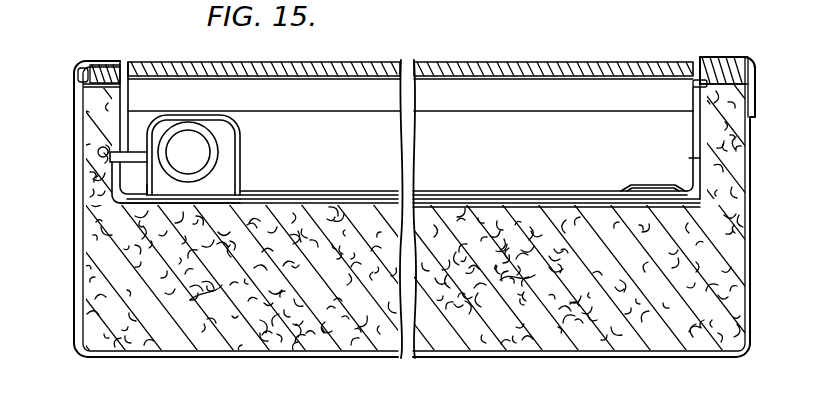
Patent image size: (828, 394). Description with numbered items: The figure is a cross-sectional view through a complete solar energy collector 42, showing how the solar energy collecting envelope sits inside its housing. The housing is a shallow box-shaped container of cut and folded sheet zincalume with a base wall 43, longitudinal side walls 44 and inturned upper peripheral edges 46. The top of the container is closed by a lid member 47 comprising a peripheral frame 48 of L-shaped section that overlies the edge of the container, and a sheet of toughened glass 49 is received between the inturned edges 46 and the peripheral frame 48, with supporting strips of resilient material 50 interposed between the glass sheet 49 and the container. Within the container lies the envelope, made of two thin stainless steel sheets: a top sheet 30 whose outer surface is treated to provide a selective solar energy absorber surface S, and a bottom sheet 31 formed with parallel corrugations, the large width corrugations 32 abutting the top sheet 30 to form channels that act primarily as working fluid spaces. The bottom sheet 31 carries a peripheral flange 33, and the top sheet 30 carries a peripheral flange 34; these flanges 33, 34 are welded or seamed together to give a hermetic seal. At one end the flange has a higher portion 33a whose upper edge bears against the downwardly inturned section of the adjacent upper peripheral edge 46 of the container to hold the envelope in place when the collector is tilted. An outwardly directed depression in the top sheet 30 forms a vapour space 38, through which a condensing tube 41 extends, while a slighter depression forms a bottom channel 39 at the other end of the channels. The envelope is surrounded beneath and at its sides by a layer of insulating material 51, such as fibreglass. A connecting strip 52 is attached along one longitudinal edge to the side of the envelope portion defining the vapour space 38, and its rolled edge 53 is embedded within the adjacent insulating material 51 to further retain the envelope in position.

The top sheet 30 is at (527, 189).
The bottom sheet 31 is at (561, 211).
The large width corrugations 32 is at (240, 182).
The peripheral flange 33 is at (104, 166).
The higher portion of the peripheral flange 33a is at (693, 157).
The peripheral flange 34 is at (137, 132).
The vapour space 38 is at (153, 167).
The bottom channel 39 is at (642, 183).
The condensing tube 41 is at (240, 150).
The solar energy collector 42 is at (551, 49).
The base wall 43 is at (233, 358).
The longitudinal side walls 44 is at (80, 327).
The inturned upper peripheral edges 46 is at (104, 64).
The lid member 47 is at (414, 60).
The peripheral frame 48 is at (93, 66).
The sheet of toughened glass 49 is at (355, 63).
The supporting strips of resilient material 50 is at (128, 68).
The layer of insulating material 51 is at (197, 293).
The connecting strip 52 is at (98, 150).
The rolled edge 53 is at (100, 157).
The selective solar energy absorber surface S is at (475, 190).